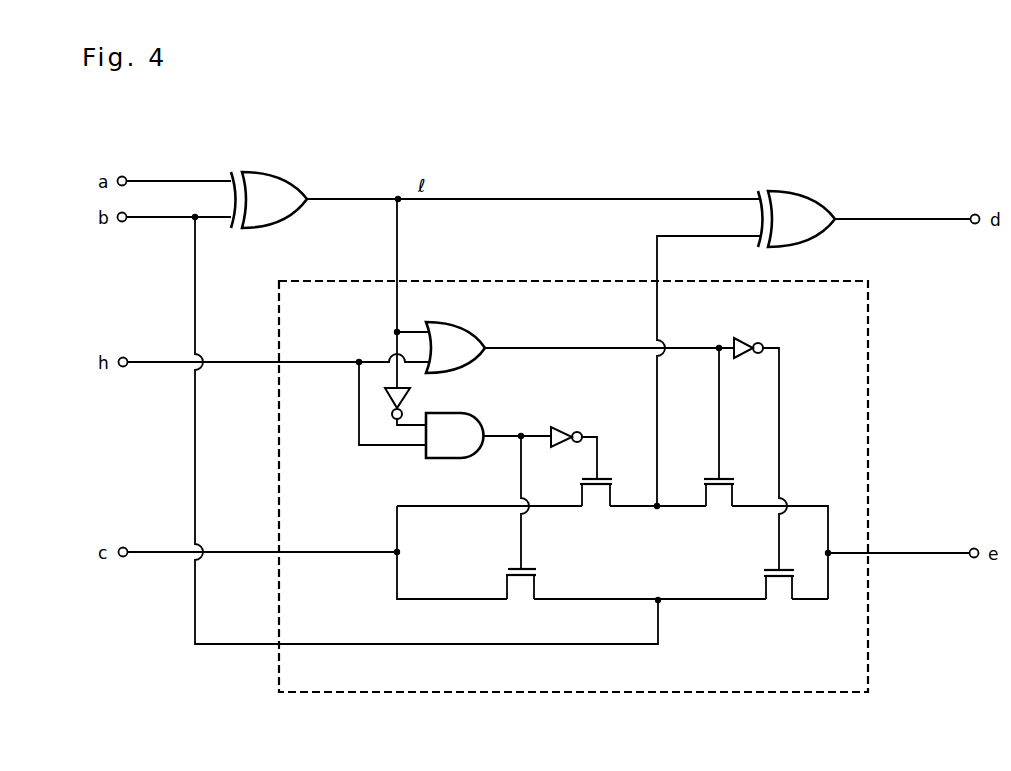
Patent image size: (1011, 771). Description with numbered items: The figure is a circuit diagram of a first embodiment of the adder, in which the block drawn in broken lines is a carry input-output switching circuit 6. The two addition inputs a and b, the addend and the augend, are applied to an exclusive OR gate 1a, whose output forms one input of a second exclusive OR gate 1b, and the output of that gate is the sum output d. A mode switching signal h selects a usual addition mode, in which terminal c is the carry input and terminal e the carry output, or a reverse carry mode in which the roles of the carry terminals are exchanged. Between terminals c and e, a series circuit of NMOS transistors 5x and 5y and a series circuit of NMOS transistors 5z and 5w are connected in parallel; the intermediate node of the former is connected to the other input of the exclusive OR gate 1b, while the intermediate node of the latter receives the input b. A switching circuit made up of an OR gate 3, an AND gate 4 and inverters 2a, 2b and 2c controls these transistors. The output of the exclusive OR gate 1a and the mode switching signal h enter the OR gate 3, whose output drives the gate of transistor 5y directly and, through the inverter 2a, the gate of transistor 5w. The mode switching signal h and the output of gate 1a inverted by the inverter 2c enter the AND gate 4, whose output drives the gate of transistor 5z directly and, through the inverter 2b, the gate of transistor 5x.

The exclusive OR gate 1a is at (288, 177).
The exclusive OR gate 1b is at (819, 199).
The inverter 2a is at (752, 343).
The inverter 2b is at (574, 430).
The inverter 2c is at (406, 402).
The OR gate 3 is at (473, 326).
The AND gate 4 is at (483, 424).
The NMOS transistor 5x is at (600, 514).
The NMOS transistor 5y is at (720, 510).
The NMOS transistor 5z is at (538, 583).
The NMOS transistor 5w is at (779, 603).
The carry input-output switching circuit 6 is at (868, 309).